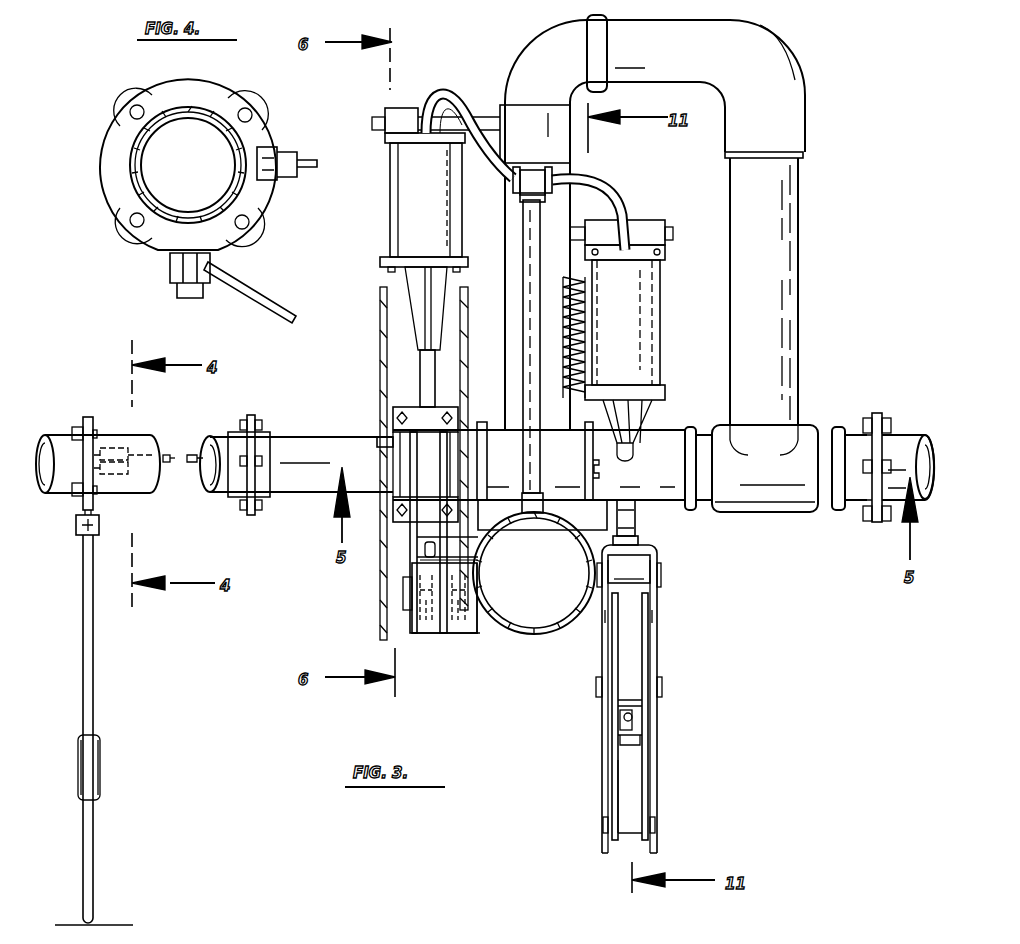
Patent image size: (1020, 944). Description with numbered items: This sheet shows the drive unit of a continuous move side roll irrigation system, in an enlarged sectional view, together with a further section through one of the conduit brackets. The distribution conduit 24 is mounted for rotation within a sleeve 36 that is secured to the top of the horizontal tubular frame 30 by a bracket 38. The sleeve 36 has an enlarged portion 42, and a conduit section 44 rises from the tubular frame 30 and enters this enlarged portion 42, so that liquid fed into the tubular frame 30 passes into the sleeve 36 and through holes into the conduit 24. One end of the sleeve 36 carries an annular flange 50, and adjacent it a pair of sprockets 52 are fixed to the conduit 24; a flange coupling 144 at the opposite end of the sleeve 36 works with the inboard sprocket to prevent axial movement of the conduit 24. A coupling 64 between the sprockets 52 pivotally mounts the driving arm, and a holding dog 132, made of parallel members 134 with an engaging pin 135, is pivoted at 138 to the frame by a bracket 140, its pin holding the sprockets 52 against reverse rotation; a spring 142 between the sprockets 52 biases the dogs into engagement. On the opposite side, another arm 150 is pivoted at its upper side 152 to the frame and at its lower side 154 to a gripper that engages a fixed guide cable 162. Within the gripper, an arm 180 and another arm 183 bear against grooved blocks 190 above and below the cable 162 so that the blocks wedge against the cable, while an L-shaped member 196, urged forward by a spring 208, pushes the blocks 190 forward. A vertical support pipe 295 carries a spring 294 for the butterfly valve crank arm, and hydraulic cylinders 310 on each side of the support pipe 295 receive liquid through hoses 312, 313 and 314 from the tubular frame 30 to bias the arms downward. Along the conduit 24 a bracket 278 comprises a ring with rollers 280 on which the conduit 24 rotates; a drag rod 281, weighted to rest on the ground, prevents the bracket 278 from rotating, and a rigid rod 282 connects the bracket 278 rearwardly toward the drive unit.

In FIG. 4, the distribution conduit 24 is at (137, 165).
In FIG. 3, the distribution conduit 24 is at (58, 490).
In FIG. 3, the tubular frame 30 is at (538, 636).
In FIG. 3, the sleeve 36 is at (833, 505).
In FIG. 3, the bracket 38 is at (605, 522).
In FIG. 3, the enlarged portion 42 is at (762, 500).
In FIG. 3, the conduit section 44 is at (805, 200).
In FIG. 3, the annular flange 50 is at (493, 462).
In FIG. 3, the sprockets 52 is at (378, 310).
In FIG. 3, the coupling 64 is at (400, 495).
In FIG. 3, the holding dog 132 is at (410, 557).
In FIG. 3, the parallel members 134 is at (440, 552).
In FIG. 3, the engaging pin 135 is at (383, 440).
In FIG. 3, the pivot 138 is at (422, 634).
In FIG. 3, the bracket 140 is at (488, 632).
In FIG. 3, the spring 142 is at (448, 560).
In FIG. 3, the flange coupling 144 is at (877, 412).
In FIG. 3, the arm 150 is at (658, 598).
In FIG. 3, the pivot 152 is at (660, 575).
In FIG. 3, the pivot 154 is at (662, 690).
In FIG. 3, the guide cable 162 is at (634, 720).
In FIG. 3, the arm 180 is at (633, 648).
In FIG. 3, the arm 183 is at (633, 797).
In FIG. 3, the blocks 190 is at (610, 712).
In FIG. 3, the L-shaped member 196 is at (607, 727).
In FIG. 3, the spring 208 is at (626, 742).
In FIG. 4, the brackets 278 is at (220, 96).
In FIG. 3, the brackets 278 is at (90, 417).
In FIG. 4, the rollers 280 is at (122, 107).
In FIG. 3, the rollers 280 is at (75, 430).
In FIG. 4, the drag rods 281 is at (295, 312).
In FIG. 3, the drag rods 281 is at (92, 677).
In FIG. 4, the rigid rods 282 is at (310, 160).
In FIG. 3, the rigid rods 282 is at (185, 463).
In FIG. 3, the spring 294 is at (588, 345).
In FIG. 3, the support pipe 295 is at (533, 112).
In FIG. 3, the hydraulic cylinders 310 is at (398, 205).
In FIG. 3, the hose 312 is at (523, 232).
In FIG. 3, the hose 313 is at (449, 98).
In FIG. 3, the hose 314 is at (615, 205).